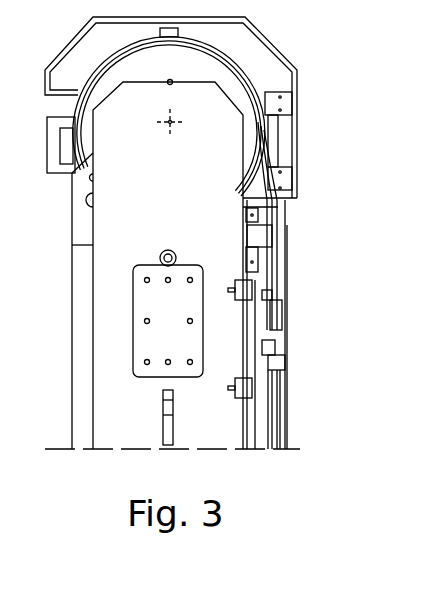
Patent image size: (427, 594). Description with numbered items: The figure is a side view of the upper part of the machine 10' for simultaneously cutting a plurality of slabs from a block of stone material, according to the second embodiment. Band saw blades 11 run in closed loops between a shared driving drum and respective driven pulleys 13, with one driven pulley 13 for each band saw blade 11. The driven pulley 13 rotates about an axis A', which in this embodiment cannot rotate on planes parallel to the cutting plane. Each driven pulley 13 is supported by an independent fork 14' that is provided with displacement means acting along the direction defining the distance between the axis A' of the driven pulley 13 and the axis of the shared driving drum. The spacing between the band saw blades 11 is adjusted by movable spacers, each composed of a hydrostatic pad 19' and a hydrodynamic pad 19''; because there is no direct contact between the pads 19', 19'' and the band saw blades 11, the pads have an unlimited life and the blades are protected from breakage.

The machine for the simultaneous cutting of a plurality of slabs 10' is at (354, 58).
The driven pulley 13 is at (215, 45).
The independent fork 14' is at (136, 265).
The hydrostatic pad 19' is at (313, 285).
The hydrodynamic pad 19'' is at (326, 330).
The band saw blade 11 is at (272, 393).
The axis of rotation of the driven pulley A' is at (176, 132).